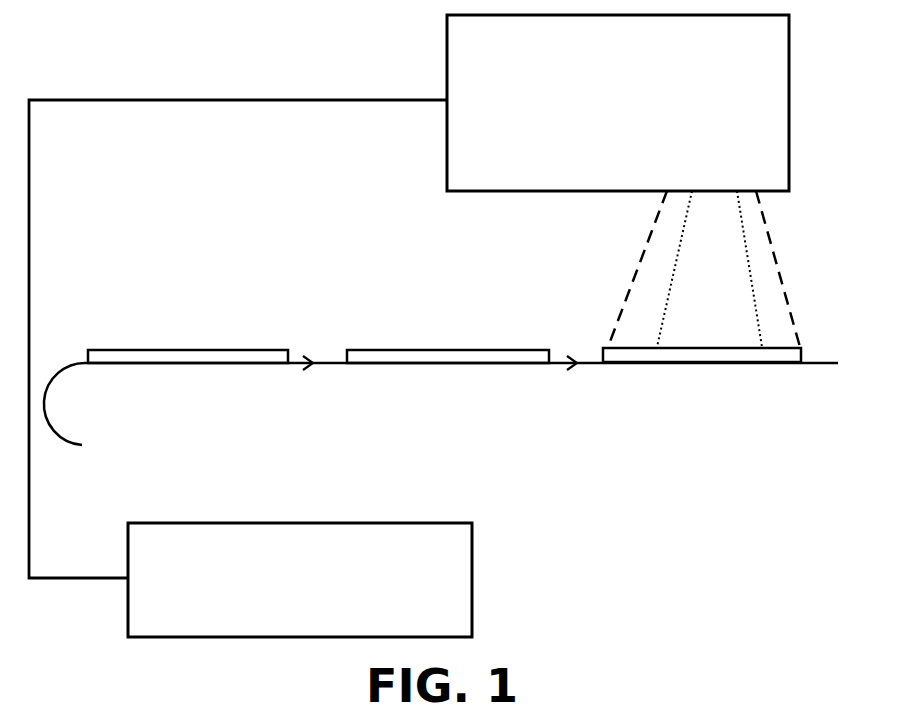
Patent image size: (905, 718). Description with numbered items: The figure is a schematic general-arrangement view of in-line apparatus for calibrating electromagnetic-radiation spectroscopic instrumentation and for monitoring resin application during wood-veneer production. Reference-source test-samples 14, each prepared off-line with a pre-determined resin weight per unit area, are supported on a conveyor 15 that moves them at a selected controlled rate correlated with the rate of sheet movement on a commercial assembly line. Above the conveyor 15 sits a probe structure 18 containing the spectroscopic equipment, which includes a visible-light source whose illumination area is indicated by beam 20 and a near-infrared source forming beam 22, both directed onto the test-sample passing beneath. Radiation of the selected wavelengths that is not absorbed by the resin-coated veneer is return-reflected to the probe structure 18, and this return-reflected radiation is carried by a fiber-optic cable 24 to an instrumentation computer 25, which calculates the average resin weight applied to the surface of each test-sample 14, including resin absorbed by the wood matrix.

The reference-source test-sample 14 is at (445, 363).
The conveyor 15 is at (321, 363).
The probe structure 18 is at (618, 103).
The beam 20 is at (775, 245).
The beam 22 is at (709, 269).
The fiber-optic cable 24 is at (187, 100).
The instrumentation computer 25 is at (300, 580).